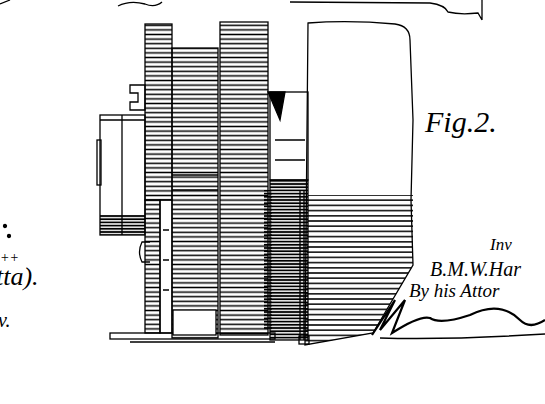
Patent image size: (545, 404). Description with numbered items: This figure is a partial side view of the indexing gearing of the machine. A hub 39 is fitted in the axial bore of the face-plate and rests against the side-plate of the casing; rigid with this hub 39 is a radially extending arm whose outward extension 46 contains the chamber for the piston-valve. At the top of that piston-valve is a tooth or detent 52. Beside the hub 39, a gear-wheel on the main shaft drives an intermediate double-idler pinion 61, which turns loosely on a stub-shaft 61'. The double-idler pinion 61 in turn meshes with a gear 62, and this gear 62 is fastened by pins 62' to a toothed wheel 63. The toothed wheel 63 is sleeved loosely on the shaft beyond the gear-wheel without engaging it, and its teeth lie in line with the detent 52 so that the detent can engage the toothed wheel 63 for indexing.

The hub 39 is at (288, 136).
The outward extension 46 is at (112, 340).
The tooth or detent 52 is at (142, 333).
The double-idler pinion 61 is at (84, 160).
The stub-shaft 61' is at (324, 251).
The gear 62 is at (195, 172).
The pins 62' is at (120, 254).
The toothed wheel 63 is at (145, 282).